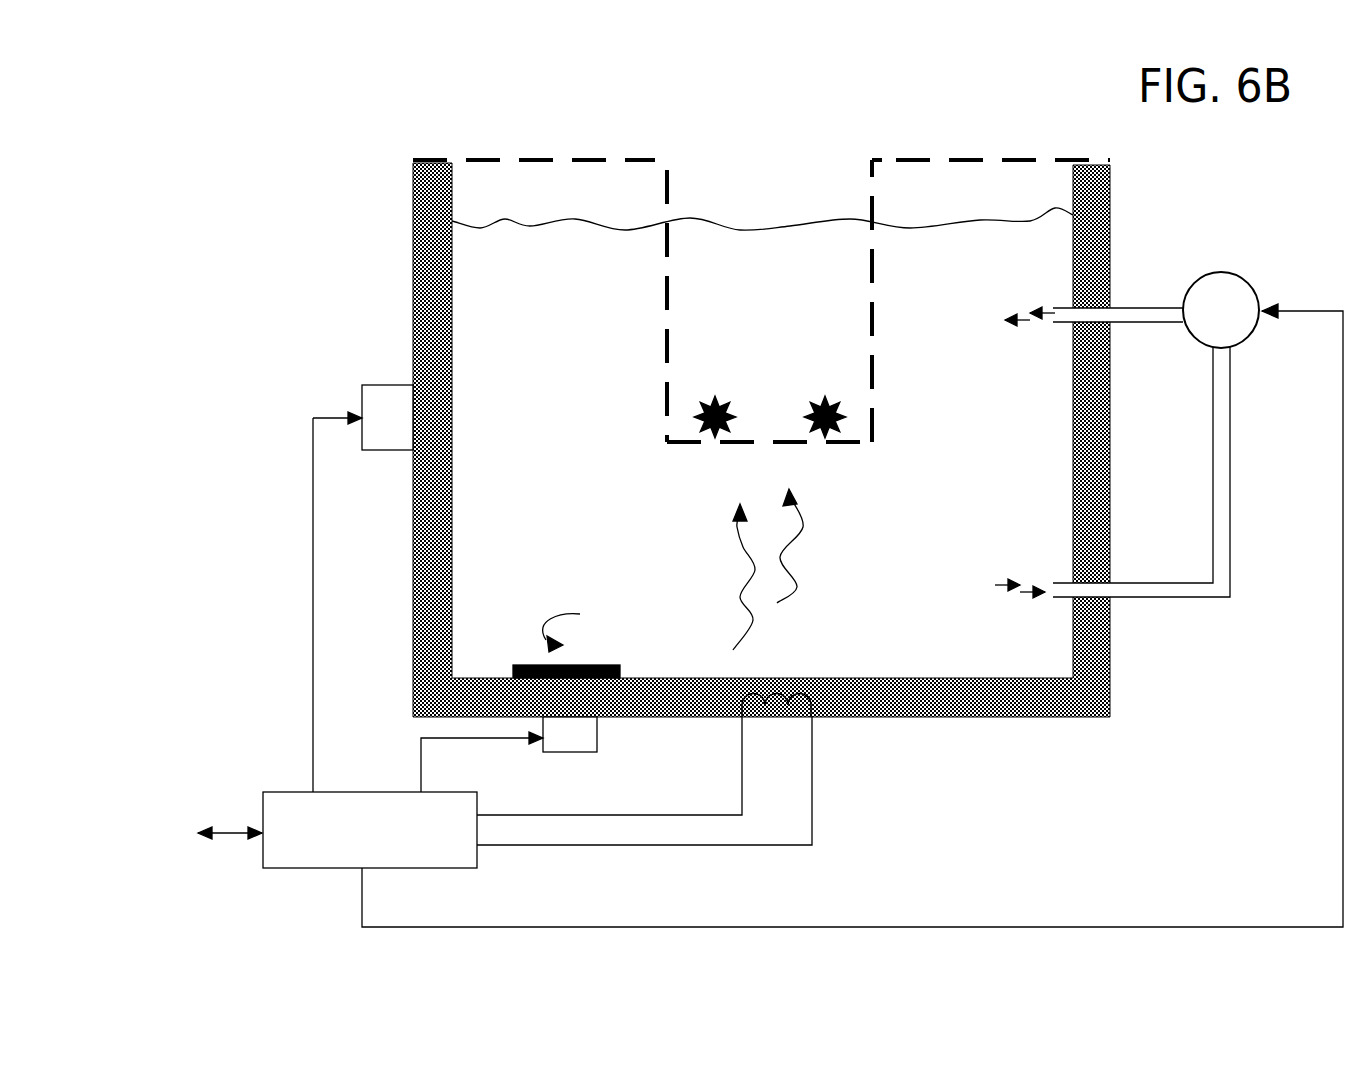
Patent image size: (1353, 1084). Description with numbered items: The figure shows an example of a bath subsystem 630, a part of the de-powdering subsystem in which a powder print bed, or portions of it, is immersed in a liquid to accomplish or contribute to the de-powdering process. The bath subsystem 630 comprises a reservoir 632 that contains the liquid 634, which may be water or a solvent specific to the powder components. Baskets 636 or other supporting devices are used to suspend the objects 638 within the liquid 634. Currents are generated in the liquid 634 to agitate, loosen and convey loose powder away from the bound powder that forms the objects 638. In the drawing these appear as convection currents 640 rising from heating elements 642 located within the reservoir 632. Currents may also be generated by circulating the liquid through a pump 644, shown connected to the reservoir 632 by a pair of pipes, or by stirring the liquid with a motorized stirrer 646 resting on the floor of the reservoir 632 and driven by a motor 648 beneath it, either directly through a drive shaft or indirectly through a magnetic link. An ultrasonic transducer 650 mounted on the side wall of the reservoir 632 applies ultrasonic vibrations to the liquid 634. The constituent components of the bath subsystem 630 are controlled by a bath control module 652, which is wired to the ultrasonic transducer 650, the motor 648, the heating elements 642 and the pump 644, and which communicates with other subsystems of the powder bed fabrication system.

The bath subsystem 630 is at (236, 152).
The reservoir 632 is at (420, 263).
The liquid 634 is at (762, 344).
The baskets 636 is at (667, 289).
The objects 638 is at (712, 398).
The convection currents 640 is at (755, 572).
The heating elements 642 is at (795, 705).
The pump 644 is at (1232, 280).
The motorized stirrer 646 is at (617, 663).
The motor 648 is at (583, 742).
The ultrasonic transducer 650 is at (362, 393).
The bath control module 652 is at (287, 790).